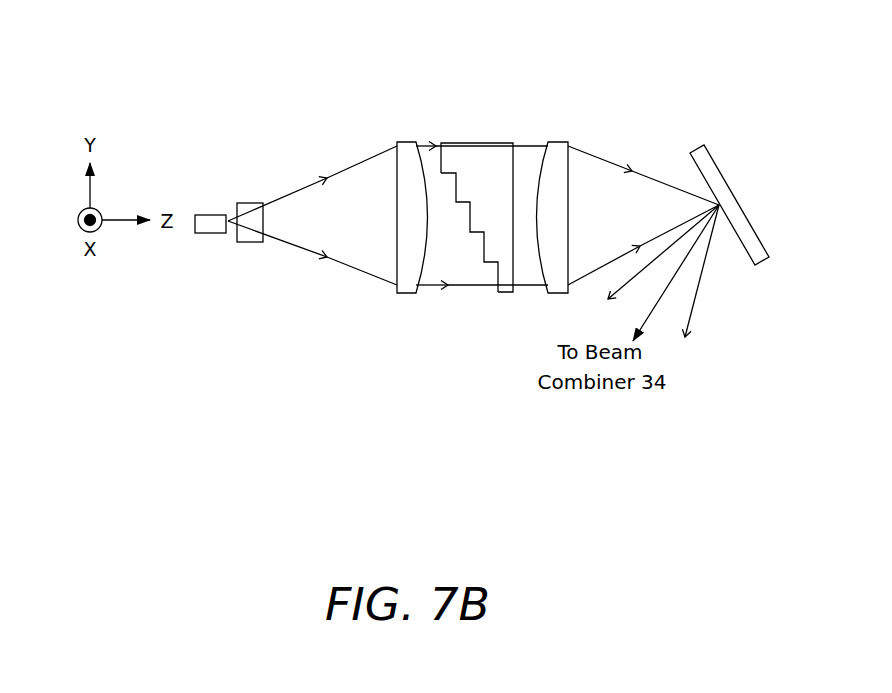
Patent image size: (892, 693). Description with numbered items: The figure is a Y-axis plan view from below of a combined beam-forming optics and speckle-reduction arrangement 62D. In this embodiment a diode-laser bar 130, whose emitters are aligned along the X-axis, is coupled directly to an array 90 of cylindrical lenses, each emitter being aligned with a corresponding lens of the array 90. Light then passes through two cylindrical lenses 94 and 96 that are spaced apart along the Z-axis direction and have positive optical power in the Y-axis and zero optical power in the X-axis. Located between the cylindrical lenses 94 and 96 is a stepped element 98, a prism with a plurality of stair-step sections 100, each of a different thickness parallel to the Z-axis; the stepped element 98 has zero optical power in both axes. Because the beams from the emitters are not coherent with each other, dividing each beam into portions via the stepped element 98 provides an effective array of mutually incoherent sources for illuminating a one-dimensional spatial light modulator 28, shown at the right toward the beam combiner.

The one-dimensional spatial light modulator 28 is at (693, 144).
The combined beam-forming optics and speckle-reduction arrangement 62D is at (619, 506).
The array of cylindrical lenses 90 is at (253, 248).
The cylindrical lens 94 is at (397, 296).
The cylindrical lens 96 is at (564, 129).
The stepped element 98 is at (503, 299).
The stair-step sections 100 is at (455, 193).
The diode-laser bar 130 is at (207, 236).